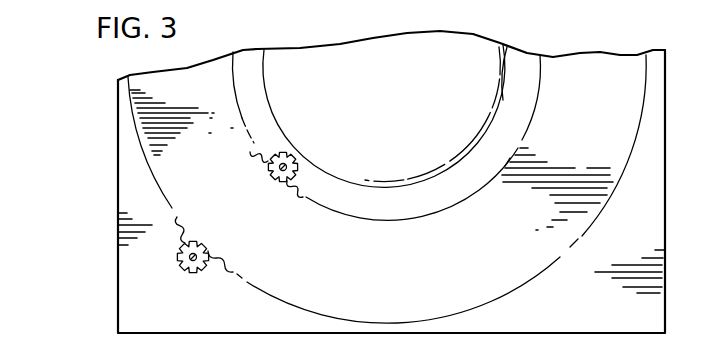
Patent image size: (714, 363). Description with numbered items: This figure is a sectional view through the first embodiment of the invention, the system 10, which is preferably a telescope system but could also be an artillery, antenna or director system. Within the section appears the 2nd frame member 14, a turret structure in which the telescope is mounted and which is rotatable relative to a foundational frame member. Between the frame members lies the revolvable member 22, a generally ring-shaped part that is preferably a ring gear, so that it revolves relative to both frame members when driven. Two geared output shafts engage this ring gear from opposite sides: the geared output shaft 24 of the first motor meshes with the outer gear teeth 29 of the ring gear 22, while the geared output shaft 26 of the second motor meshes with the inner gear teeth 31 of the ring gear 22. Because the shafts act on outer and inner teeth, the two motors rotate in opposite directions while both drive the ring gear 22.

The system 10 is at (84, 233).
The 2nd frame member 14 is at (438, 90).
The revolvable member 22 is at (477, 275).
The geared output shaft 24 is at (186, 266).
The geared output shaft 26 is at (296, 150).
The outer gear teeth 29 is at (229, 264).
The inner gear teeth 31 is at (293, 182).